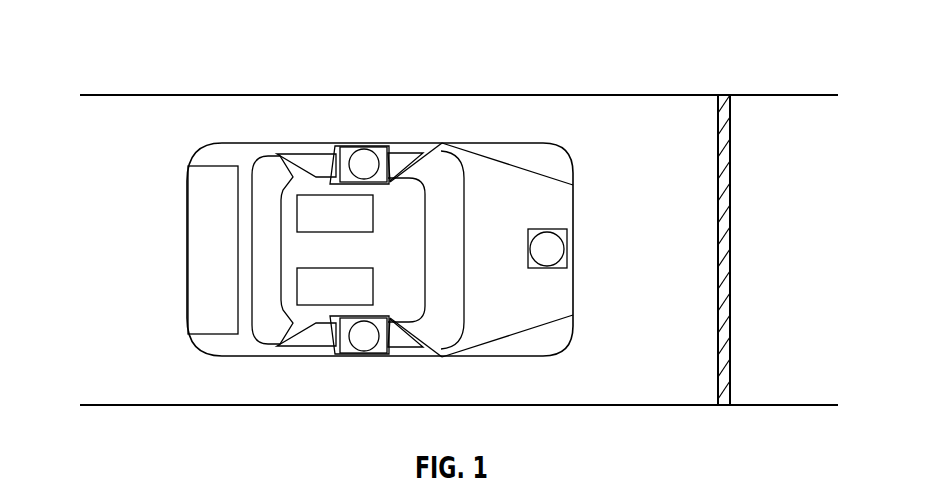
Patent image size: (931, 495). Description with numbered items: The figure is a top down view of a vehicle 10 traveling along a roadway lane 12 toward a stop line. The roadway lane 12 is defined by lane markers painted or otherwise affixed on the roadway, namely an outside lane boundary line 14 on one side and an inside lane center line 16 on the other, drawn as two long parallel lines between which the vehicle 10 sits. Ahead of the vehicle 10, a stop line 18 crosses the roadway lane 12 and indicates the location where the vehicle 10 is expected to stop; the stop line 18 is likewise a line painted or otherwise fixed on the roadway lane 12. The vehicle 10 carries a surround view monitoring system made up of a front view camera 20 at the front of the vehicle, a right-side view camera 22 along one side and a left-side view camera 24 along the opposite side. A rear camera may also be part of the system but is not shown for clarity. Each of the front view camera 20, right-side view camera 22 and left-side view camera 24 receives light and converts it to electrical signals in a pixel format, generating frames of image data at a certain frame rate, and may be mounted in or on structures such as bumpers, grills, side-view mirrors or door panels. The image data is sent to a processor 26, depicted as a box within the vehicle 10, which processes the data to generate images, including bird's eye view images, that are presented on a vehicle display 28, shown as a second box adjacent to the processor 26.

The vehicle 10 is at (158, 195).
The roadway lane 12 is at (90, 282).
The outside lane boundary line 14 is at (170, 404).
The inside lane center line 16 is at (170, 94).
The stop line 18 is at (730, 242).
The front view camera 20 is at (557, 250).
The right-side view camera 22 is at (362, 342).
The left-side view camera 24 is at (362, 157).
The processor 26 is at (348, 228).
The vehicle display 28 is at (348, 301).